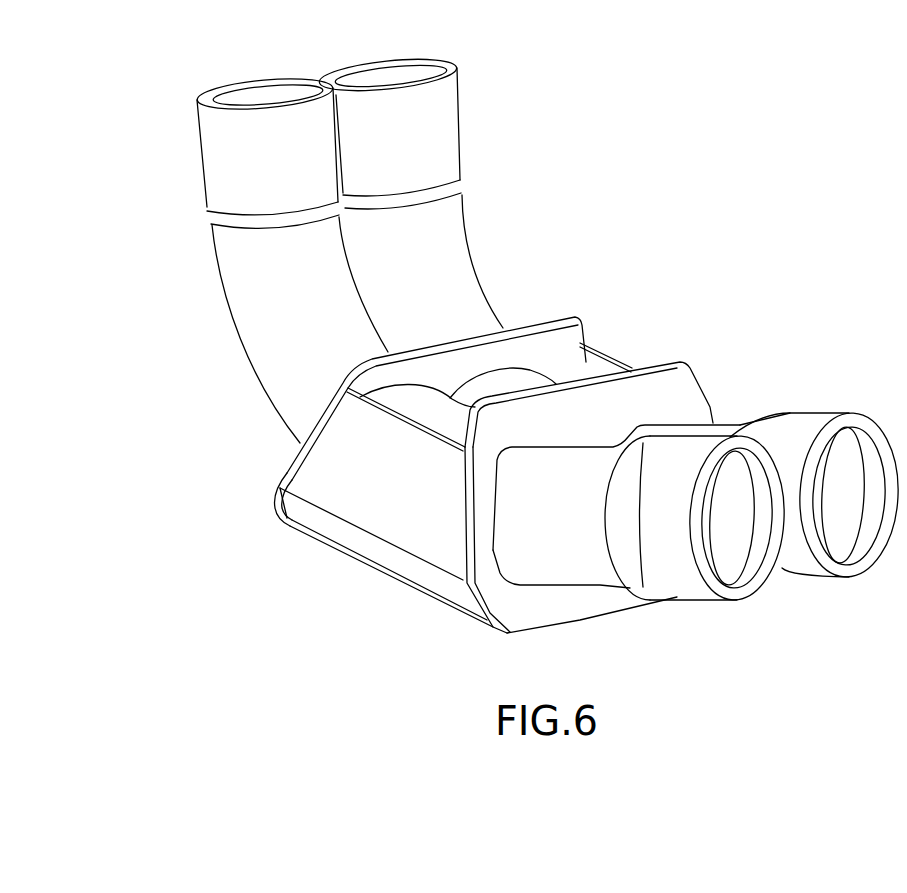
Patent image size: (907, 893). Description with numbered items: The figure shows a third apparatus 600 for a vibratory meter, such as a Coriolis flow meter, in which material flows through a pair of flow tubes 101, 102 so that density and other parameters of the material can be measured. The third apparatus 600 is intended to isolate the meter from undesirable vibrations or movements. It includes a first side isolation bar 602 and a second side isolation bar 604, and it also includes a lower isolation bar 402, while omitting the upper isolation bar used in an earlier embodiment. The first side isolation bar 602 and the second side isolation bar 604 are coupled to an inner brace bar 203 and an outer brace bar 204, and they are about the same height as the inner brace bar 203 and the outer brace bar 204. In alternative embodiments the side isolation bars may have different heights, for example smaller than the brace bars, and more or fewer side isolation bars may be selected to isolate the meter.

The third apparatus 600 is at (807, 205).
The flow tube 101 is at (235, 327).
The flow tube 102 is at (478, 280).
The inner brace bar 203 is at (567, 317).
The first side isolation bar 602 is at (620, 358).
The second side isolation bar 604 is at (285, 482).
The lower isolation bar 402 is at (343, 555).
The outer brace bar 204 is at (700, 378).